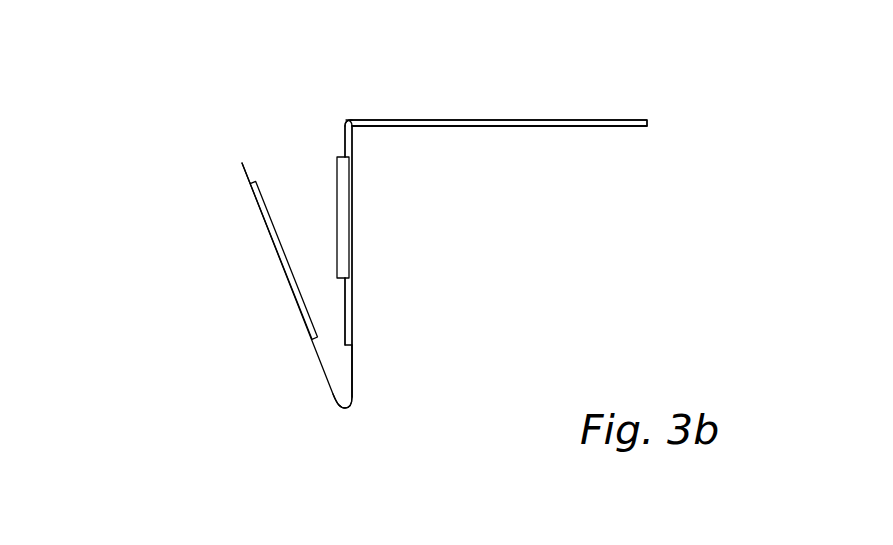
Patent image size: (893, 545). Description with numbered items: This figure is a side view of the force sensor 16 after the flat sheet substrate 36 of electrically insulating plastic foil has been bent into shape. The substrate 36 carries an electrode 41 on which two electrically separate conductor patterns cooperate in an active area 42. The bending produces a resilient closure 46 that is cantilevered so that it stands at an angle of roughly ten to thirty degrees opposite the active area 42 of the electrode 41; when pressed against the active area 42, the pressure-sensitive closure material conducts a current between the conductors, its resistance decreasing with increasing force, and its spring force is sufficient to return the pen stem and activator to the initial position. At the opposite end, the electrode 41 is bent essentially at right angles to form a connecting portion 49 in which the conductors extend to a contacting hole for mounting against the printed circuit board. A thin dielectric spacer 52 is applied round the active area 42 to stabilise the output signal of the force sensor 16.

The force sensor 16 is at (170, 183).
The sheet substrate 36 is at (355, 360).
The electrode 41 is at (406, 111).
The active area 42 is at (326, 214).
The closure 46 is at (264, 180).
The connecting portion 49 is at (534, 110).
The spacer 52 is at (349, 191).